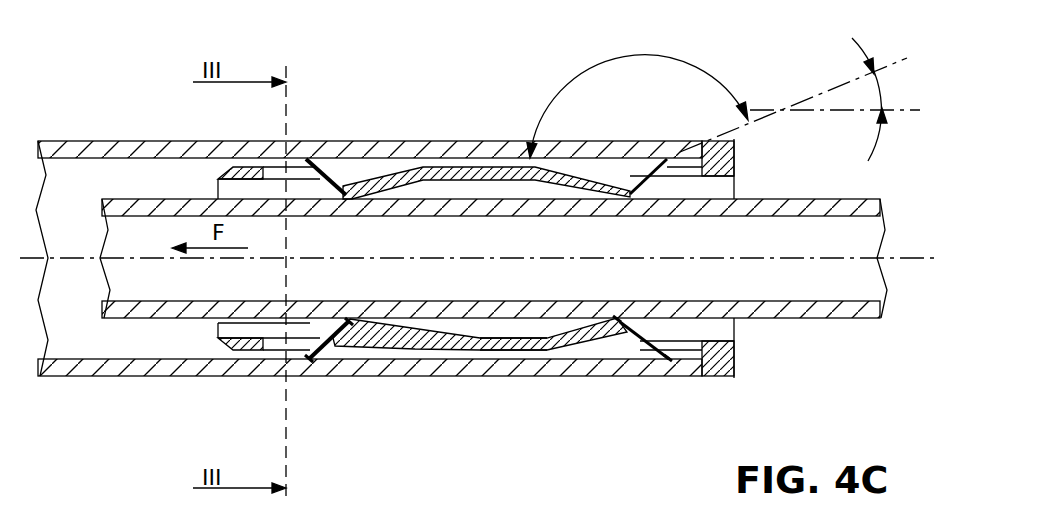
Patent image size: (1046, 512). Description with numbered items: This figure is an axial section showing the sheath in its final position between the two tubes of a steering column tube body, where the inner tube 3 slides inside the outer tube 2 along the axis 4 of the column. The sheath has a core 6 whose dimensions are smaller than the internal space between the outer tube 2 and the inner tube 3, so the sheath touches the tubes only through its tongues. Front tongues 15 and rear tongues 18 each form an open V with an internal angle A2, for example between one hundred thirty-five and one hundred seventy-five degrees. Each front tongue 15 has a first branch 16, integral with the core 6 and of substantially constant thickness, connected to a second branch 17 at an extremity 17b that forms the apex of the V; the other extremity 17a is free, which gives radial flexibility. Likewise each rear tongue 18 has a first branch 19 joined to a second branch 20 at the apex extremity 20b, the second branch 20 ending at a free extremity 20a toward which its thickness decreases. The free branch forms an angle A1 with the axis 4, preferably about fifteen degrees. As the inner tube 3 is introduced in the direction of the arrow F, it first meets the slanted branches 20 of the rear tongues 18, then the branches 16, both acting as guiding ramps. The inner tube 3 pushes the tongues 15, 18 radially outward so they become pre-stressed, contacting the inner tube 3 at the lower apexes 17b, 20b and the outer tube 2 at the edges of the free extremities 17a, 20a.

The outer tube 2 is at (133, 152).
The inner tube 3 is at (768, 198).
The axis 4 is at (783, 255).
The core 6 is at (493, 174).
The front tongues 15 is at (352, 160).
The first branch 16 is at (407, 344).
The second branch 17 is at (325, 336).
The free extremity 17a is at (309, 362).
The apex extremity 17b is at (350, 318).
The rear tongues 18 is at (657, 214).
The first branch 19 is at (583, 343).
The second branch 20 is at (640, 343).
The free extremity 20a is at (672, 356).
The apex extremity 20b is at (617, 318).
The angle A1 is at (800, 99).
The internal angle A2 is at (637, 92).